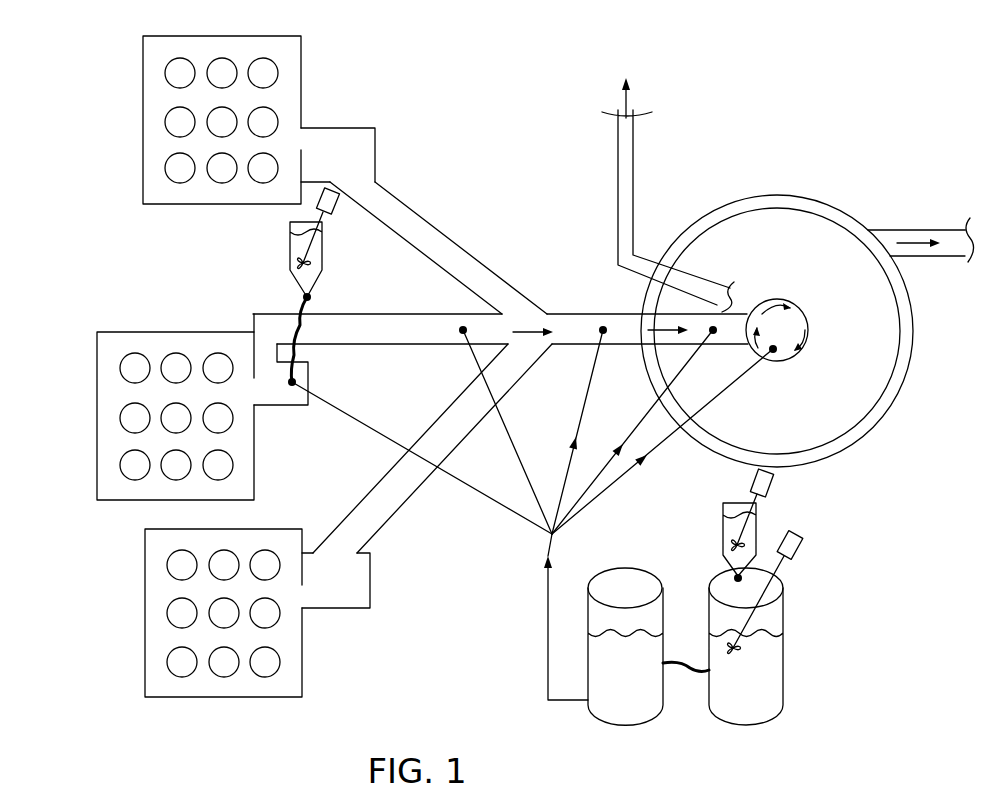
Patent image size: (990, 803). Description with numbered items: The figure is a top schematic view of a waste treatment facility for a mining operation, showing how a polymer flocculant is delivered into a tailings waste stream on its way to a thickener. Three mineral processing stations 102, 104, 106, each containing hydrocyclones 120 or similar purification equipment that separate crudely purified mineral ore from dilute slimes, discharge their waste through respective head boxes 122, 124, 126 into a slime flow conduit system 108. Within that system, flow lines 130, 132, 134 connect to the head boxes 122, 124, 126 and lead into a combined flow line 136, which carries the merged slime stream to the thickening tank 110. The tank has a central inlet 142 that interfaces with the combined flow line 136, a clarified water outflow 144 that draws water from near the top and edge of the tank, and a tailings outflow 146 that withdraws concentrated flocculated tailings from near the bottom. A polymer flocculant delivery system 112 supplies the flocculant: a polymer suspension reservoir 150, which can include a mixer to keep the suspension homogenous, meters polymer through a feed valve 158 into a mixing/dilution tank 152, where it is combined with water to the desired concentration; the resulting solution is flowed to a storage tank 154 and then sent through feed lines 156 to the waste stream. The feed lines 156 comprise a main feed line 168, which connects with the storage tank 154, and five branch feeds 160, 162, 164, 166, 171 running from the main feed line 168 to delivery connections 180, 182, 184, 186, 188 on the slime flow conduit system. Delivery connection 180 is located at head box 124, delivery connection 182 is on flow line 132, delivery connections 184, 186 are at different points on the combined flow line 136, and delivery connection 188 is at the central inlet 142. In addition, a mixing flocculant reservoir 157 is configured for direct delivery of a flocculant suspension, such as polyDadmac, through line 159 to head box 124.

The mineral processing station 102 is at (302, 80).
The mineral processing station 104 is at (140, 500).
The mineral processing station 106 is at (215, 697).
The slime flow conduit system 108 is at (514, 256).
The thickening tank 110 is at (895, 422).
The polymer flocculant delivery system 112 is at (478, 596).
The hydrocyclones 120 is at (263, 185).
The head box 122 is at (377, 161).
The head box 124 is at (310, 387).
The head box 126 is at (316, 612).
The flow line 130 is at (430, 221).
The flow line 132 is at (388, 314).
The flow line 134 is at (466, 437).
The combined flow line 136 is at (558, 313).
The central inlet 142 is at (773, 298).
The clarified water outflow 144 is at (918, 258).
The tailings outflow 146 is at (635, 196).
The polymer suspension reservoir 150 is at (722, 532).
The mixing/dilution tank 152 is at (784, 661).
The storage tank 154 is at (613, 722).
The feed lines 156 is at (526, 617).
The mixing flocculant reservoir 157 is at (294, 262).
The feed valve 158 is at (736, 578).
The line 159 is at (312, 303).
The branch feed 160 is at (356, 420).
The branch feed 162 is at (510, 432).
The branch feed 164 is at (565, 483).
The branch feed 166 is at (640, 424).
The main feed line 168 is at (546, 672).
The branch feed 171 is at (676, 433).
The delivery connection 180 is at (291, 386).
The delivery connection 182 is at (461, 331).
The delivery connection 184 is at (601, 331).
The delivery connection 186 is at (714, 332).
The delivery connection 188 is at (774, 351).